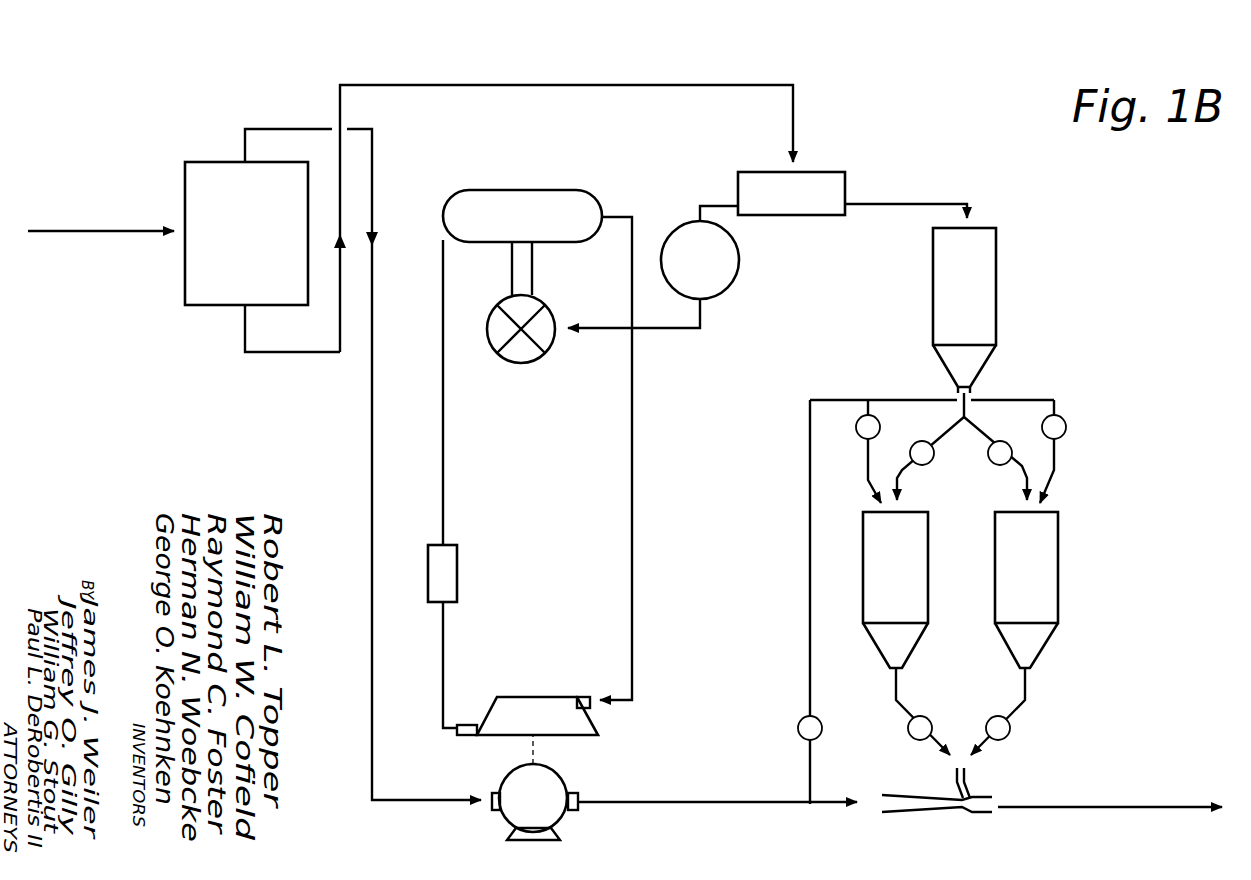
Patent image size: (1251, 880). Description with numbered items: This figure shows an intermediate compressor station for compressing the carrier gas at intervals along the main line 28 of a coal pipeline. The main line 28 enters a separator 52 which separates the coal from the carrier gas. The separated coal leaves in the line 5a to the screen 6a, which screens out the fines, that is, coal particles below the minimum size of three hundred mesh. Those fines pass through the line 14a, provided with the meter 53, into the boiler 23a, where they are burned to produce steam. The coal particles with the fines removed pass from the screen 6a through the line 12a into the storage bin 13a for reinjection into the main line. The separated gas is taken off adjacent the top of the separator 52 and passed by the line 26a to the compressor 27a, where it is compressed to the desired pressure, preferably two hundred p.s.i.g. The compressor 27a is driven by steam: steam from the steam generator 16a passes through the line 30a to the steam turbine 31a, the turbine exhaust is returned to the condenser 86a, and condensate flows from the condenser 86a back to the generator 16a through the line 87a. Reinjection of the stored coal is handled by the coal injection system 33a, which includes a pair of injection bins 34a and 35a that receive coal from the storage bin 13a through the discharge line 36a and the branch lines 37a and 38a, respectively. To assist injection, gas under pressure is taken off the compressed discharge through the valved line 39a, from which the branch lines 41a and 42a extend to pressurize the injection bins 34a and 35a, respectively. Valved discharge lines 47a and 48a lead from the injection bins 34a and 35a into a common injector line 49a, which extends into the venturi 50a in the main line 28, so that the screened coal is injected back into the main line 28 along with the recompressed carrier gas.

The main line 28 is at (66, 231).
The separator 52 is at (259, 209).
The gas line 26a is at (288, 128).
The coal line 5a is at (548, 85).
The steam generator 16a is at (525, 190).
The boiler 23a is at (523, 363).
The meter 53 is at (738, 289).
The fines line 14a is at (704, 206).
The screen 6a is at (806, 216).
The coal line to storage bin 12a is at (913, 204).
The storage bin 13a is at (933, 320).
The discharge line 36a is at (972, 397).
The branch pressure line 41a is at (868, 466).
The branch pressure line 42a is at (1057, 461).
The branch line 37a is at (905, 471).
The branch line 38a is at (1019, 467).
The pressure gas line 39a is at (808, 679).
The coal injection system 33a is at (1016, 577).
The injection bin 34a is at (878, 578).
The injection bin 35a is at (1009, 578).
The injection bin discharge line 47a is at (898, 687).
The injection bin discharge line 48a is at (1028, 687).
The injector line 49a is at (968, 790).
The venturi 50a is at (984, 815).
The compressor 27a is at (566, 782).
The steam turbine 31a is at (534, 697).
The steam line 30a is at (632, 500).
The condensate return line 87a is at (443, 468).
The condenser 86a is at (457, 570).